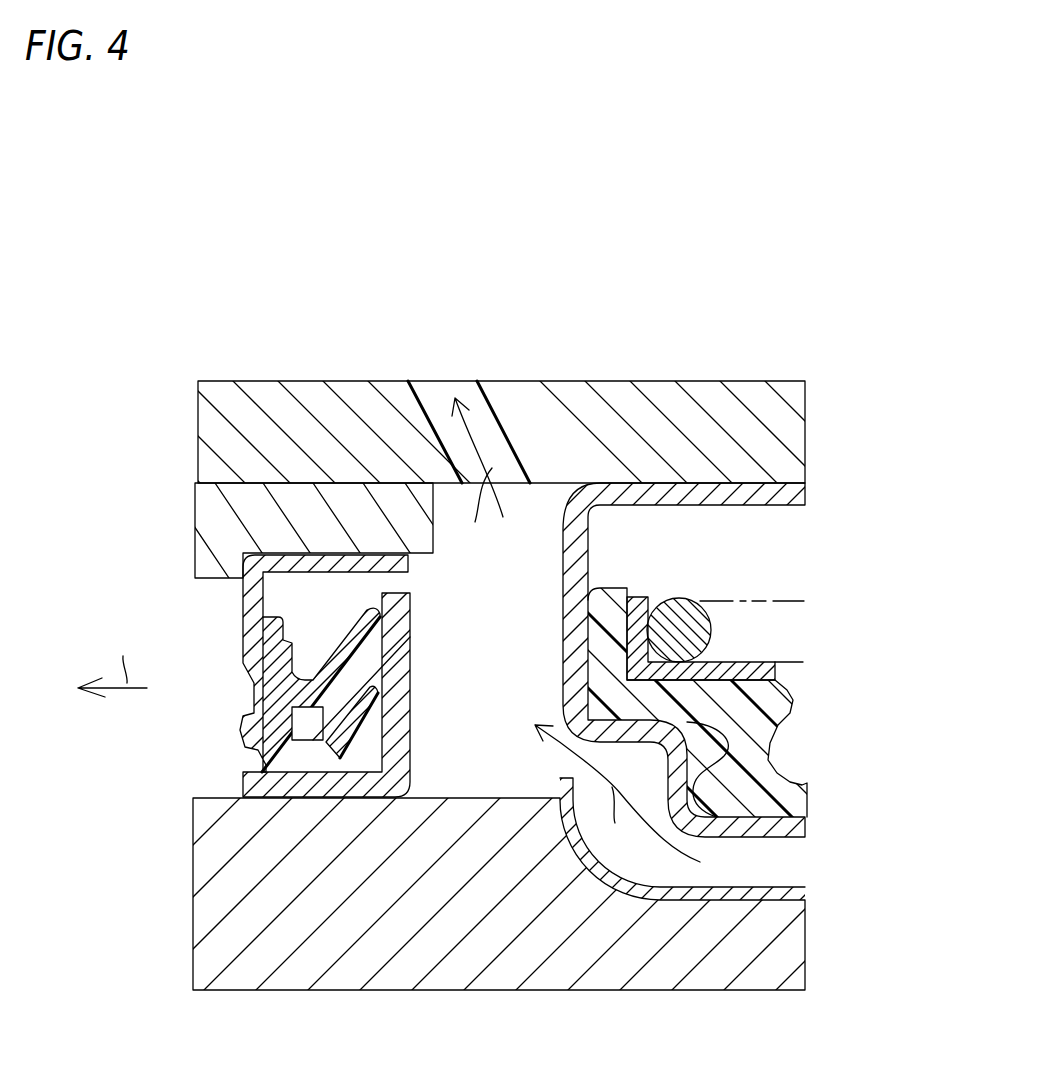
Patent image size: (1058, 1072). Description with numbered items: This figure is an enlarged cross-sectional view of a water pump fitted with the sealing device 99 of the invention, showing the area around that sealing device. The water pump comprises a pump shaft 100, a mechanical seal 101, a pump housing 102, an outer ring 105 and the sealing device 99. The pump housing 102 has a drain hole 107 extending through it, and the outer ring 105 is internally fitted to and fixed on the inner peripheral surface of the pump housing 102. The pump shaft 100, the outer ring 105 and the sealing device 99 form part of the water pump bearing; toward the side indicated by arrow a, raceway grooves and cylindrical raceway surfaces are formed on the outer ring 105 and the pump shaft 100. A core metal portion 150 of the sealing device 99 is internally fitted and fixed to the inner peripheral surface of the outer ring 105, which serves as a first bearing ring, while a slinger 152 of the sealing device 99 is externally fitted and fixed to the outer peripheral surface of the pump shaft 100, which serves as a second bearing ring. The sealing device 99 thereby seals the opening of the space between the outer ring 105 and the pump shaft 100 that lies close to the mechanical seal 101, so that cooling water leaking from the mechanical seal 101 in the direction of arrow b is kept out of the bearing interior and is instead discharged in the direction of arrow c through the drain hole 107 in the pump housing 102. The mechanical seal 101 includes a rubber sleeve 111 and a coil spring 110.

The sealing device 99 is at (207, 738).
The pump shaft 100 is at (782, 943).
The mechanical seal 101 is at (808, 618).
The pump housing 102 is at (652, 395).
The outer ring 105 is at (210, 515).
The drain hole 107 is at (421, 408).
The coil spring 110 is at (678, 613).
The rubber sleeve 111 is at (793, 698).
The core metal portion 150 is at (243, 622).
The slinger 152 is at (410, 680).